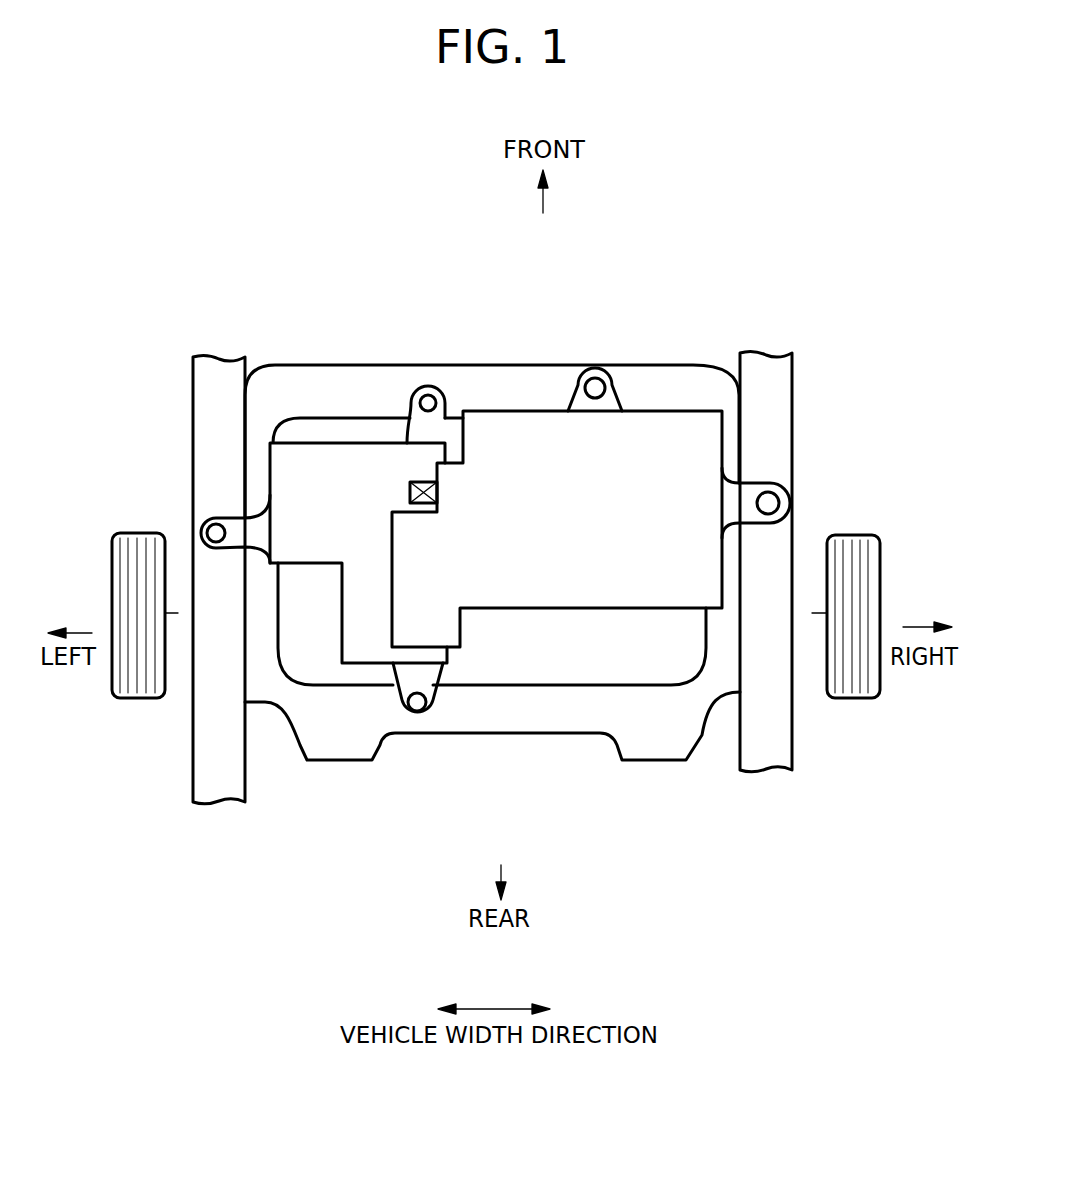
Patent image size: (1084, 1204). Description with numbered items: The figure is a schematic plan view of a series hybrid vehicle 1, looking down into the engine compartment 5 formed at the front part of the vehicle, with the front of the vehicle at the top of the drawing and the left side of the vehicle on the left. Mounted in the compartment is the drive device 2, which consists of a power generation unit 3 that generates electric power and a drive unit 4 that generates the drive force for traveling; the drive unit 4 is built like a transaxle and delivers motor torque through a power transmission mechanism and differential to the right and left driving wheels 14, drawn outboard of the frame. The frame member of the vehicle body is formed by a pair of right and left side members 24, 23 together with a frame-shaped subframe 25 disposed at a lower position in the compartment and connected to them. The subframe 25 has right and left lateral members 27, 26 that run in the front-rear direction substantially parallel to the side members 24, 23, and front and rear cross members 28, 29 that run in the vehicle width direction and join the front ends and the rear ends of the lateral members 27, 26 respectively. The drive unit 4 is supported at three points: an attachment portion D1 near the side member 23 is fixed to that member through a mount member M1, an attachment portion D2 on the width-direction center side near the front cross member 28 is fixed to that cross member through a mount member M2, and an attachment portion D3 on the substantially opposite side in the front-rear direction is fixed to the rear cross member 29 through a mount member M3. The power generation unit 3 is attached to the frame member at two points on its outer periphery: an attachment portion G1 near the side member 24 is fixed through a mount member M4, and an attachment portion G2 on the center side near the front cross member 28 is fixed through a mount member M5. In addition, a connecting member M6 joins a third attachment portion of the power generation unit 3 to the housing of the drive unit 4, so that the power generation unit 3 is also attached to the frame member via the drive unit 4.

The vehicle 1 is at (748, 260).
The drive device 2 is at (528, 302).
The power generation unit 3 is at (522, 425).
The drive unit 4 is at (447, 455).
The engine compartment 5 is at (590, 667).
The driving wheels 14 is at (112, 568).
The side member 23 is at (197, 402).
The side member 24 is at (764, 755).
The subframe 25 is at (385, 770).
The lateral member 26 is at (258, 627).
The lateral member 27 is at (715, 627).
The front cross member 28 is at (674, 378).
The rear cross member 29 is at (490, 690).
The mount member M1 is at (205, 530).
The mount member M2 is at (430, 400).
The mount member M3 is at (407, 710).
The mount member M4 is at (770, 503).
The mount member M5 is at (593, 386).
The connecting member M6 is at (410, 493).
The attachment portion D1 is at (225, 518).
The attachment portion D2 is at (410, 407).
The attachment portion D3 is at (418, 716).
The attachment portion G1 is at (770, 484).
The attachment portion G2 is at (612, 402).